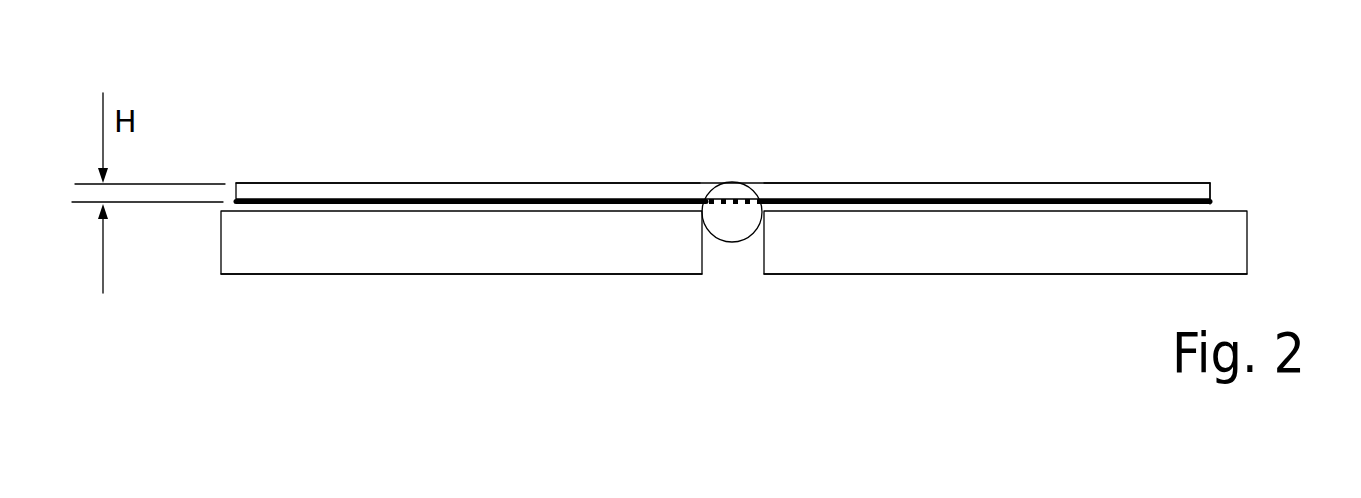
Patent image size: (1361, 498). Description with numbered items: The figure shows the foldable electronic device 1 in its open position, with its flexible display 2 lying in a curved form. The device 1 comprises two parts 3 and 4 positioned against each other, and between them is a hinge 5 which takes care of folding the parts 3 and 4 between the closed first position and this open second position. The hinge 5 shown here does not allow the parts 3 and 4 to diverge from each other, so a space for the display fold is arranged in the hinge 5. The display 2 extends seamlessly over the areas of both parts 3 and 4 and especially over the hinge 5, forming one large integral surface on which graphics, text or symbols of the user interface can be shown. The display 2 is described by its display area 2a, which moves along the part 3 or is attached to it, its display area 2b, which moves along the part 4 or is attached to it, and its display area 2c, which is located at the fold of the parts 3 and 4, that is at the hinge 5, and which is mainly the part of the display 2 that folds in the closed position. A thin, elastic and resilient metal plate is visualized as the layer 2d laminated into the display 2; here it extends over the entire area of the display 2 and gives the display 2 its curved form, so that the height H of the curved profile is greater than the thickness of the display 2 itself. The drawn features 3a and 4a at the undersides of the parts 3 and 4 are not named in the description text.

The foldable electronic device 1 is at (379, 96).
The display 2 is at (595, 182).
The display area 2a is at (1128, 193).
The display area 2b is at (447, 190).
The display area 2c is at (730, 197).
The layer 2d is at (1210, 197).
The part 3 is at (993, 247).
The bottom surface of right support block 3a is at (893, 275).
The part 4 is at (523, 240).
The bottom surface of left support block 4a is at (280, 276).
The hinge 5 is at (735, 228).